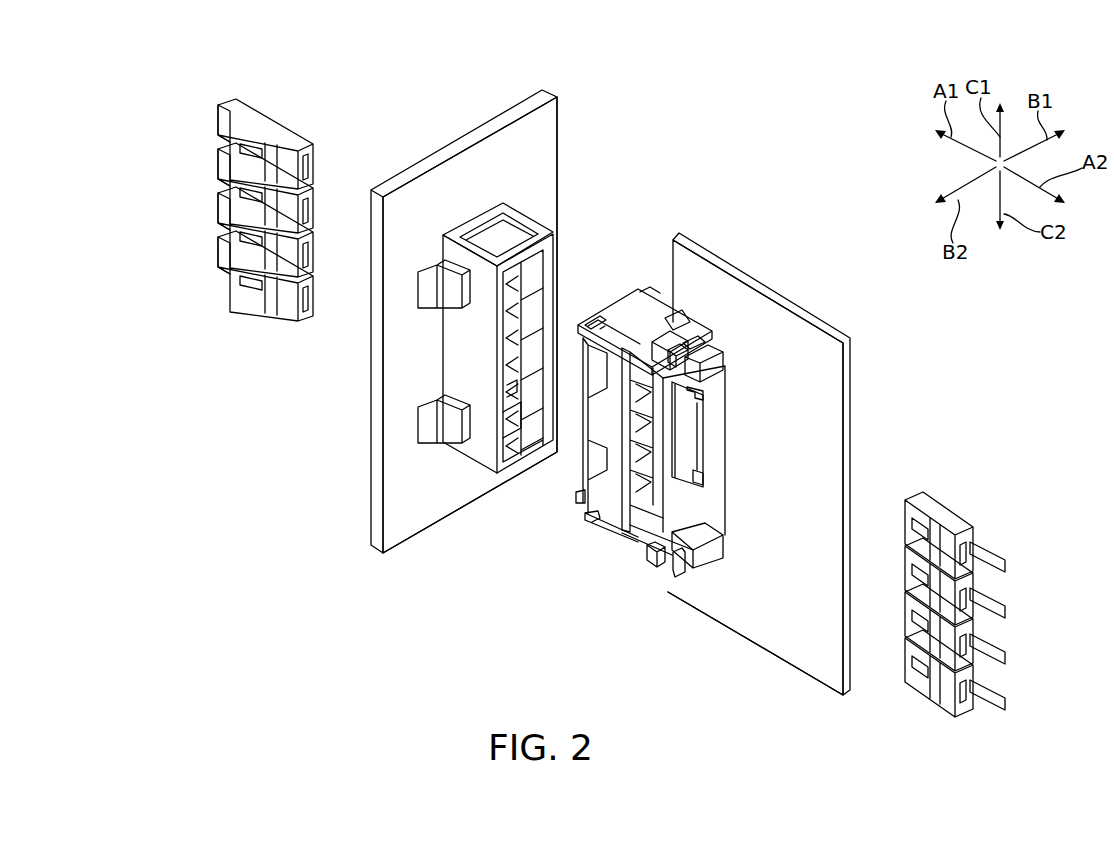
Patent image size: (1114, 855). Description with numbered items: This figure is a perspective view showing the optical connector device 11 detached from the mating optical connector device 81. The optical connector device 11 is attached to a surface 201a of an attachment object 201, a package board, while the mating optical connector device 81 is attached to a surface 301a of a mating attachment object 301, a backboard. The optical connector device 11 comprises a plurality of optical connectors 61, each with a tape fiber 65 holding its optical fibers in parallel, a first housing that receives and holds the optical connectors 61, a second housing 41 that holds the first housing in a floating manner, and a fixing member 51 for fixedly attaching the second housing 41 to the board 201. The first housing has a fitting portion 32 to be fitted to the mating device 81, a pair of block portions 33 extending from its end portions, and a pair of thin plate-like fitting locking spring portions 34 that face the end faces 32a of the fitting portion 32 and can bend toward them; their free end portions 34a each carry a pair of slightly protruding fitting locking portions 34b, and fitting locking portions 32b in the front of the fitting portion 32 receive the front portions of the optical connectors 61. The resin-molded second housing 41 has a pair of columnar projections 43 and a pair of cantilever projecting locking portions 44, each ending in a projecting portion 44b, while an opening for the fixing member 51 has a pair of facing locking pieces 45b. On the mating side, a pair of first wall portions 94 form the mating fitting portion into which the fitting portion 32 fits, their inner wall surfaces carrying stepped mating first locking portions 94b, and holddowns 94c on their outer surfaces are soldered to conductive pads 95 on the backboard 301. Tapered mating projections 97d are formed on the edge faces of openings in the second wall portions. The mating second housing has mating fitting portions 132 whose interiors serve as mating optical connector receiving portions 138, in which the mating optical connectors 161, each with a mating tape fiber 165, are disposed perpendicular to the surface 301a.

The optical connector device 11 is at (624, 538).
The fitting portion 32 is at (578, 504).
The end face 32a is at (679, 325).
The fitting locking portion 32b is at (638, 462).
The block portion 33 is at (727, 356).
The fitting locking spring portion 34 is at (647, 322).
The free end portion 34a is at (625, 330).
The fitting locking portion 34b is at (635, 318).
The second housing 41 is at (664, 430).
The columnar projection 43 is at (687, 332).
The projecting locking portion 44 is at (691, 345).
The projecting portion 44b is at (679, 578).
The locking piece 45b is at (692, 392).
The fixing member 51 is at (701, 446).
The optical connector 61 is at (977, 592).
The tape fiber 65 is at (992, 552).
The mating optical connector device 81 is at (478, 212).
The first wall portion 94 is at (463, 330).
The mating first locking portion 94b is at (540, 295).
The holddown 94c is at (445, 300).
The conductive pad 95 is at (432, 282).
The mating projection 97d is at (533, 238).
The mating fitting portion 132 is at (512, 410).
The mating optical connector receiving portion 138 is at (504, 425).
The mating optical connector 161 is at (258, 207).
The mating tape fiber 165 is at (219, 104).
The attachment object 201 is at (782, 290).
The surface 201a is at (832, 366).
The mating attachment object 301 is at (557, 112).
The surface 301a is at (545, 136).